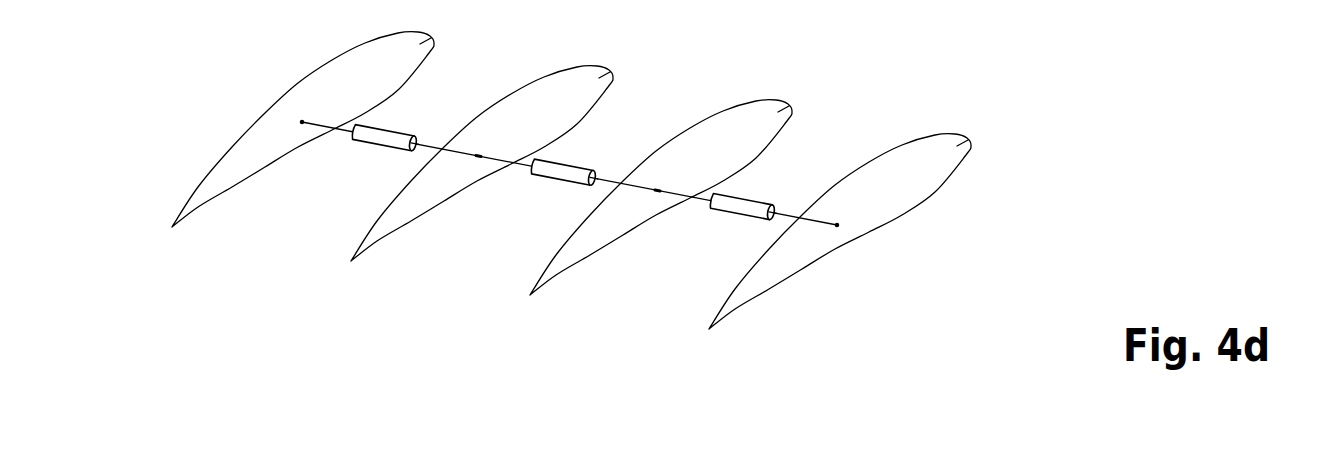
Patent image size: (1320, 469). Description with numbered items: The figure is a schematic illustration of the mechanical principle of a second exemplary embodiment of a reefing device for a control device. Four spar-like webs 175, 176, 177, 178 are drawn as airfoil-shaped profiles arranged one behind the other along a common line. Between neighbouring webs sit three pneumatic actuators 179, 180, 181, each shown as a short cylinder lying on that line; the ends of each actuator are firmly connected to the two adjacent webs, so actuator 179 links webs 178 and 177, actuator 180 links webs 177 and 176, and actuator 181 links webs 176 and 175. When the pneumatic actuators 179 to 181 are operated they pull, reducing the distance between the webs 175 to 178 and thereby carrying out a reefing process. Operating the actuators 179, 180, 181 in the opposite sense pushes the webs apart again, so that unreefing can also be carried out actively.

The web 175 is at (968, 142).
The web 176 is at (793, 106).
The web 177 is at (613, 72).
The web 178 is at (435, 38).
The pneumatic actuator 179 is at (390, 143).
The pneumatic actuator 180 is at (569, 180).
The pneumatic actuator 181 is at (745, 213).